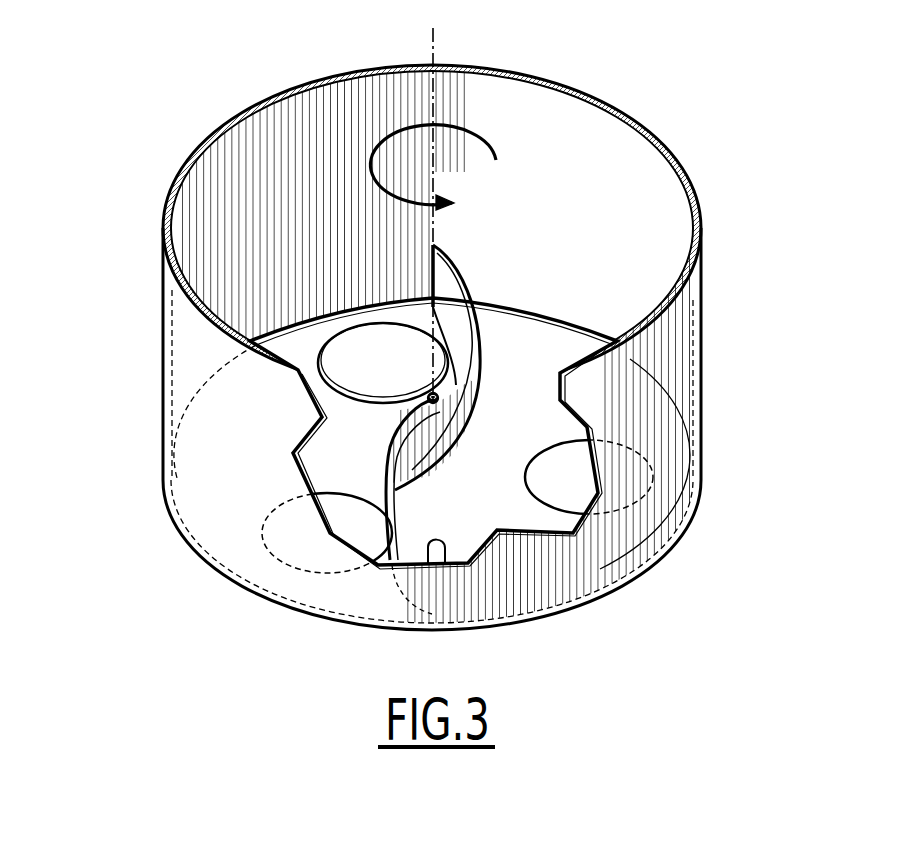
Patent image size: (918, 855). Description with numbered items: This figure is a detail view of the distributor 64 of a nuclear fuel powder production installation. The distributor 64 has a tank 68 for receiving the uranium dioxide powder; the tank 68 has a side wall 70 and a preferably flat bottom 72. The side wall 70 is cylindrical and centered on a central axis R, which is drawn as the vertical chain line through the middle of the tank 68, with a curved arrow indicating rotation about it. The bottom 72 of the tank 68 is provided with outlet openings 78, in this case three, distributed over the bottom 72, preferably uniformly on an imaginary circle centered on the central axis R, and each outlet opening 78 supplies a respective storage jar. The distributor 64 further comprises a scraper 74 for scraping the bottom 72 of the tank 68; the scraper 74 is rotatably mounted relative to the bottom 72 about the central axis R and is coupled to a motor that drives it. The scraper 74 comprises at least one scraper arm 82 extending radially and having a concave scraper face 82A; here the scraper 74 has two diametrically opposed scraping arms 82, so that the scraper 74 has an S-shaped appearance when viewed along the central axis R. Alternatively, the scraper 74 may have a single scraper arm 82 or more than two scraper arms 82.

The distributor 64 is at (408, 344).
The tank 68 is at (464, 345).
The side wall 70 is at (655, 195).
The bottom 72 is at (562, 331).
The scraper 74 is at (480, 265).
The outlet openings 78 is at (560, 468).
The scraper arm 82 is at (490, 306).
The concave scraper face 82A is at (454, 293).
The central axis R is at (433, 205).